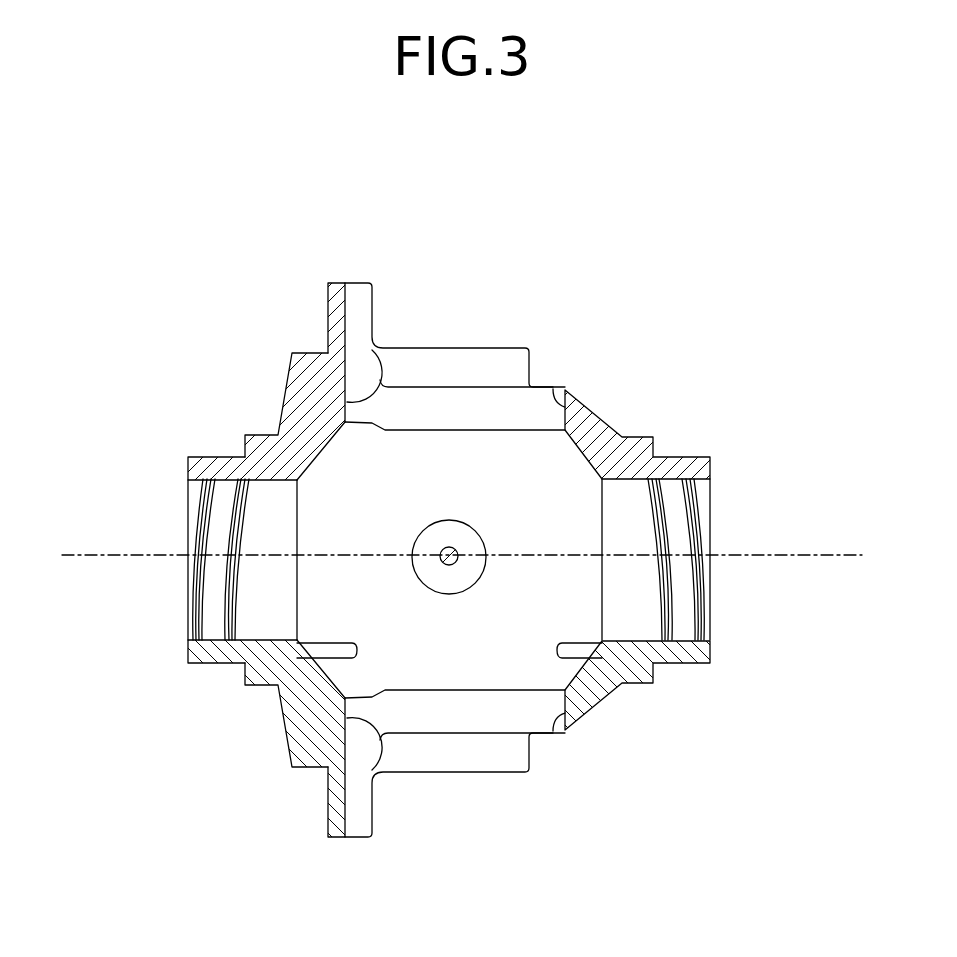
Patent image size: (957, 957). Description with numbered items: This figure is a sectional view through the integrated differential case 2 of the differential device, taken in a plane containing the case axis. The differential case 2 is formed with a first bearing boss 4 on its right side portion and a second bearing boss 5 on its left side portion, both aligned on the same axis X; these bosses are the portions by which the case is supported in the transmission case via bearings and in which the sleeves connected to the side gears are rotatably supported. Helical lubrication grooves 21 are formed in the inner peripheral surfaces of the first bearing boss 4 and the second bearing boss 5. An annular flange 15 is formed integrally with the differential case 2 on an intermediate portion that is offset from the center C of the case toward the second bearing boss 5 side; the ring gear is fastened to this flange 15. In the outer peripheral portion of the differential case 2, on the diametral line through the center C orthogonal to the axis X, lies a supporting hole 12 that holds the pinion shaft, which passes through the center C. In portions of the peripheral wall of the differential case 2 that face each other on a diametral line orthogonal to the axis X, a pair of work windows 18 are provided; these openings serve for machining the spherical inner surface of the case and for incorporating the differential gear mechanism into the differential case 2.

The differential case 2 is at (298, 417).
The first bearing boss 4 is at (672, 455).
The second bearing boss 5 is at (217, 467).
The supporting hole 12 is at (415, 572).
The annular flange 15 is at (335, 295).
The work window 18 is at (560, 388).
The helical lubrication groove 21 is at (700, 540).
The center C is at (441, 550).
The axis X is at (793, 555).